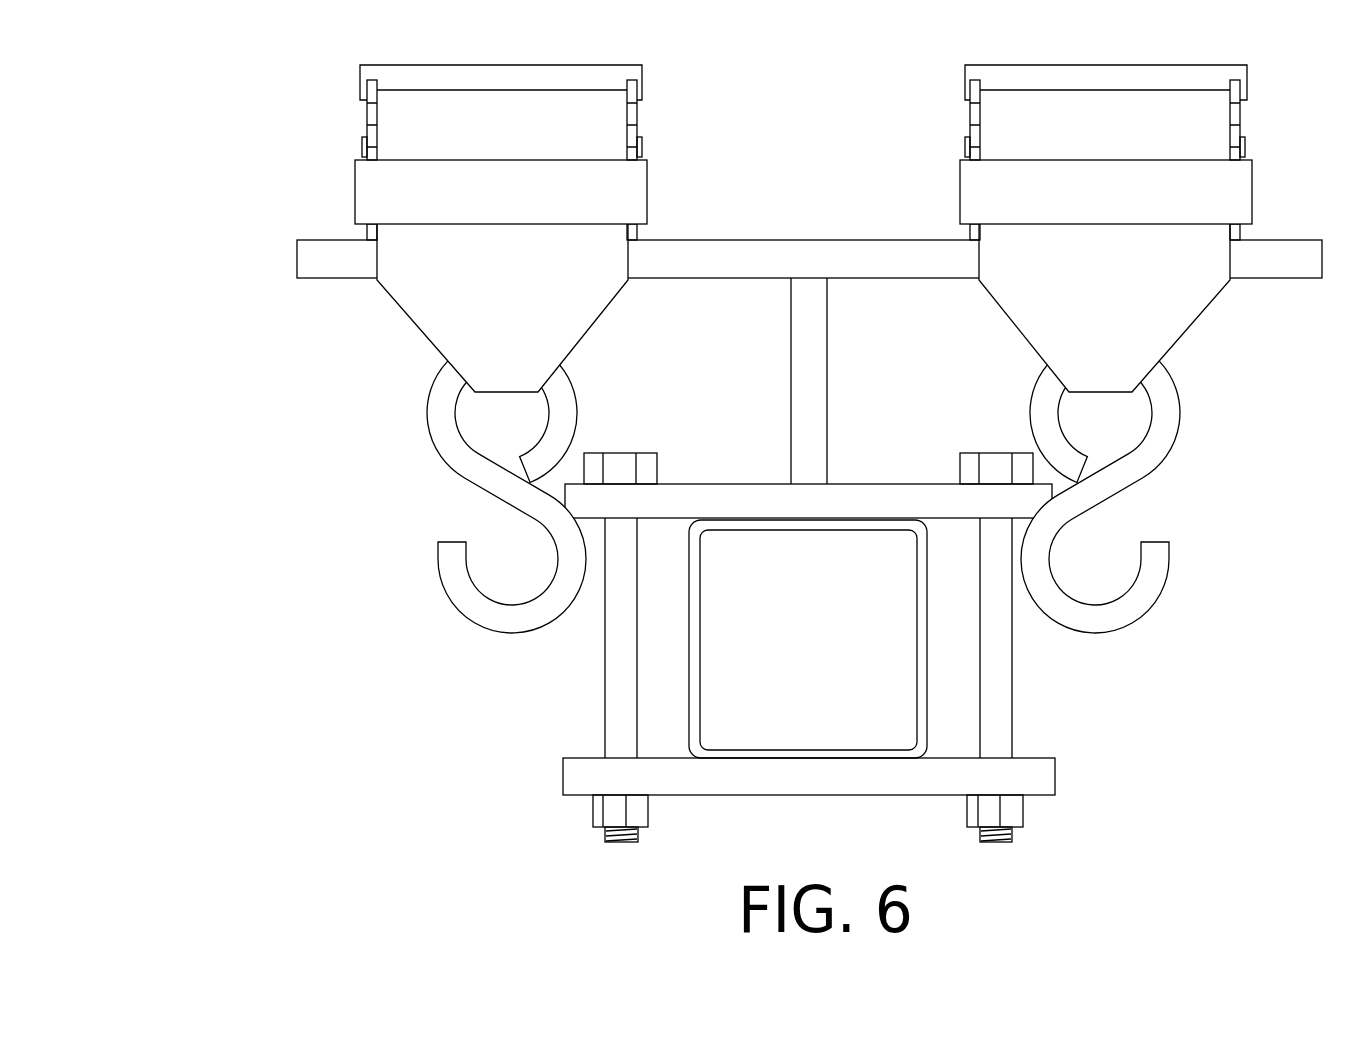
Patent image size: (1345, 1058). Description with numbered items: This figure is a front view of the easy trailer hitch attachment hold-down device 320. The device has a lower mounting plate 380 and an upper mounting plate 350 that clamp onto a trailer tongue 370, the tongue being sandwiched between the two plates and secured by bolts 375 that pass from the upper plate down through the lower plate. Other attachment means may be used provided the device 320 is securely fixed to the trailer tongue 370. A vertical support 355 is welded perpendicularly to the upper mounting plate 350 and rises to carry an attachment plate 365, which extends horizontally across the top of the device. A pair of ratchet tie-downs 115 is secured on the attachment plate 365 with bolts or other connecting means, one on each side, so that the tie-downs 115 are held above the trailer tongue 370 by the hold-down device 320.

The ratchet tie-downs 115 is at (408, 120).
The easy trailer hitch attachment hold-down device 320 is at (195, 449).
The upper mounting plate 350 is at (717, 483).
The vertical support 355 is at (808, 435).
The attachment plate 365 is at (710, 258).
The trailer tongue 370 is at (925, 665).
The bolts 375 is at (613, 658).
The lower mounting plate 380 is at (573, 773).